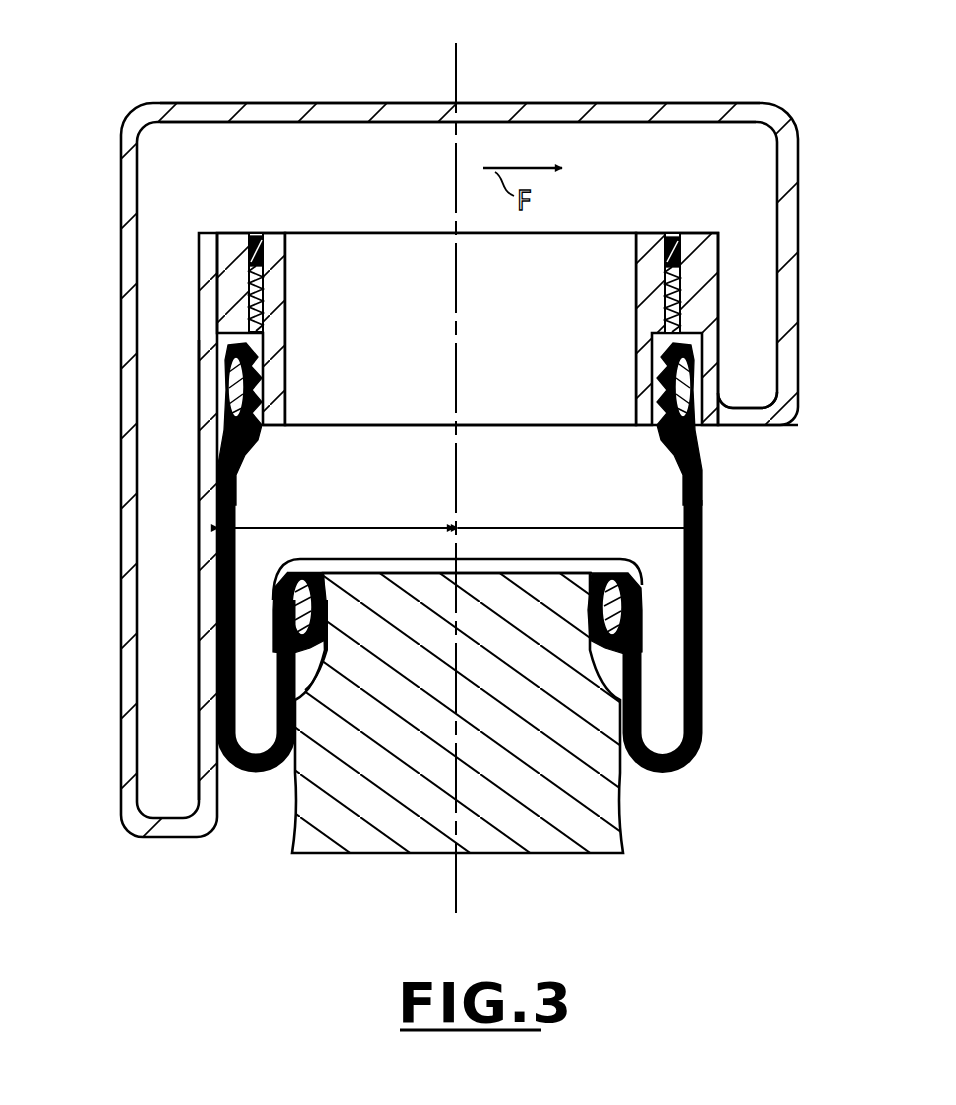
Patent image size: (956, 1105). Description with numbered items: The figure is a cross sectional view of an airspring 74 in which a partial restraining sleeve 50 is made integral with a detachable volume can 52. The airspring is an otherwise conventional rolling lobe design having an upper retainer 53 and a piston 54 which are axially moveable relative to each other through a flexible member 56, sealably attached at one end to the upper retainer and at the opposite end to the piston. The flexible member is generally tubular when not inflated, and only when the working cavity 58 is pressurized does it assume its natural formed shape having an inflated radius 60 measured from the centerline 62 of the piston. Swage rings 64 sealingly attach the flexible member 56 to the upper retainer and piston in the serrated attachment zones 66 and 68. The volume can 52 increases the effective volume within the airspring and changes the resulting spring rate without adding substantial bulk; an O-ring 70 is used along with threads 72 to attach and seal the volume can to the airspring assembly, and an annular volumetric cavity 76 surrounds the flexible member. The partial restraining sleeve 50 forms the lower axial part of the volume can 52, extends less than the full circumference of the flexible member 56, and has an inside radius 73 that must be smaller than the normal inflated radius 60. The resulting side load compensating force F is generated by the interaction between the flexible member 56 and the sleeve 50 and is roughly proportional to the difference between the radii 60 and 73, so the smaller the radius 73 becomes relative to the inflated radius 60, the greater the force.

The partial restraining sleeve 50 is at (215, 553).
The detachable volume can 52 is at (121, 210).
The upper retainer 53 is at (650, 242).
The piston 54 is at (578, 842).
The flexible member 56 is at (690, 727).
The working cavity 58 is at (702, 147).
The inflated radius 60 is at (588, 528).
The centerline 62 is at (459, 60).
The swage rings 64 is at (700, 423).
The serrated attachment zone 66 is at (657, 386).
The serrated attachment zone 68 is at (586, 601).
The O-ring 70 is at (257, 240).
The threads 72 is at (672, 300).
The inside radius 73 is at (318, 528).
The airspring 74 is at (404, 92).
The annular volumetric cavity 76 is at (760, 383).